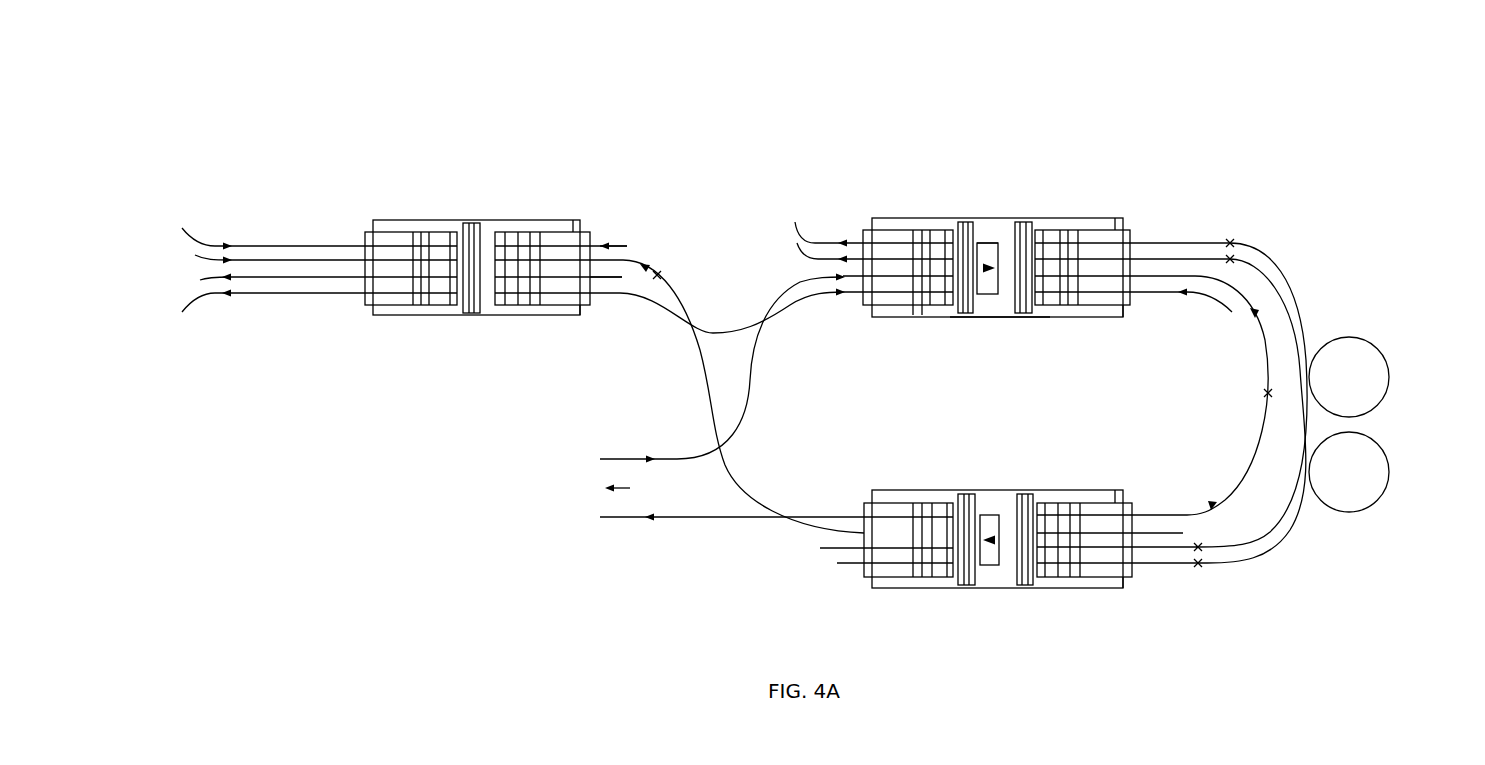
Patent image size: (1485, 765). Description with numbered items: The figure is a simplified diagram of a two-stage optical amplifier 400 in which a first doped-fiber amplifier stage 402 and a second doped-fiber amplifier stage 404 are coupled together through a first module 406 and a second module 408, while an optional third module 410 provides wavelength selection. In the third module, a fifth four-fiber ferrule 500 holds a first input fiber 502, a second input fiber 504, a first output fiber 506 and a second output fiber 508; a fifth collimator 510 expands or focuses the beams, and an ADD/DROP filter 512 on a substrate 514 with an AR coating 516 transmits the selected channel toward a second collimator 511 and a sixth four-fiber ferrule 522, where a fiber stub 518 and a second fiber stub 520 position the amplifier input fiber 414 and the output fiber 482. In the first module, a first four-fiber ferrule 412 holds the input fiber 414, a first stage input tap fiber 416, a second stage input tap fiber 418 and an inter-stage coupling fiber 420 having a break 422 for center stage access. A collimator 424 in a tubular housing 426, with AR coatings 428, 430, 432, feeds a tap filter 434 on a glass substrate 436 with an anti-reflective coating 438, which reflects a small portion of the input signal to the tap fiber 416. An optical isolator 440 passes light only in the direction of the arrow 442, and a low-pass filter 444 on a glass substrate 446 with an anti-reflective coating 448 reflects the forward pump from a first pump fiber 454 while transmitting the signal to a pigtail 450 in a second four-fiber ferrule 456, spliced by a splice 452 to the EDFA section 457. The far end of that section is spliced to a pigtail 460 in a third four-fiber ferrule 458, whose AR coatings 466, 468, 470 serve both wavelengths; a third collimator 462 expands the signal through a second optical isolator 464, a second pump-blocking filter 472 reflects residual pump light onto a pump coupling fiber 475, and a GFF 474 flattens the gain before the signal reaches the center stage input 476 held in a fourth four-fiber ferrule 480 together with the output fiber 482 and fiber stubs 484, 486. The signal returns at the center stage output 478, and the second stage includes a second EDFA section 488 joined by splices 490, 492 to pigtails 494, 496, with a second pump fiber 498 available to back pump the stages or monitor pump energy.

The two-stage optical amplifier 400 is at (982, 100).
The first doped-fiber amplifier stage 402 is at (1387, 348).
The second doped-fiber amplifier stage 404 is at (1385, 505).
The first module 406 is at (1045, 215).
The second module 408 is at (998, 488).
The third module 410 is at (490, 220).
The first four-fiber ferrule 412 is at (860, 228).
The amplifier input fiber 414 is at (793, 315).
The first stage input tap fiber 416 is at (800, 226).
The second stage input tap fiber 418 is at (797, 248).
The inter-stage coupling fiber 420 is at (758, 380).
The break 422 is at (637, 489).
The collimator 424 is at (926, 230).
The tubular housing 426 is at (990, 318).
The AR coating 428 is at (920, 308).
The AR coating 430 is at (930, 306).
The AR coating 432 is at (948, 230).
The tap filter 434 is at (960, 313).
The glass substrate 436 is at (965, 222).
The anti-reflective coating 438 is at (972, 315).
The optical isolator 440 is at (992, 245).
The arrow 442 is at (990, 248).
The low-pass filter 444 is at (1020, 315).
The glass substrate 446 is at (1058, 230).
The anti-reflective coating 448 is at (1027, 315).
The pigtail 450 is at (1198, 242).
The splice 452 is at (1230, 241).
The first pump fiber 454 is at (1207, 297).
The second four-fiber ferrule 456 is at (1125, 218).
The EDFA section 457 is at (1390, 377).
The third four-fiber ferrule 458 is at (1123, 490).
The pigtail 460 is at (1180, 566).
The third collimator 462 is at (1055, 503).
The second optical isolator 464 is at (985, 565).
The AR coating 466 is at (1040, 580).
The AR coating 468 is at (1070, 580).
The AR coating 470 is at (1078, 578).
The second pump-blocking filter 472 is at (1028, 494).
The GFF 474 is at (962, 494).
The pump coupling fiber 475 is at (1262, 420).
The center stage input 476 is at (600, 516).
The center stage output 478 is at (600, 459).
The fourth four-fiber ferrule 480 is at (895, 578).
The output fiber 482 is at (797, 525).
The fiber stub 484 is at (835, 549).
The fiber stub 486 is at (845, 565).
The second EDFA section 488 is at (1390, 475).
The splice 490 is at (1233, 257).
The splice 492 is at (1205, 563).
The pigtail 494 is at (1155, 258).
The pigtail 496 is at (1200, 546).
The second pump fiber 498 is at (1183, 532).
The fifth four-fiber ferrule 500 is at (385, 232).
The first input fiber 502 is at (192, 235).
The second input fiber 504 is at (195, 255).
The first output fiber 506 is at (192, 310).
The second output fiber 508 is at (200, 280).
The fifth collimator 510 is at (440, 305).
The collimator 511 is at (512, 232).
The ADD/DROP filter 512 is at (468, 313).
The substrate 514 is at (470, 222).
The AR coating 516 is at (477, 313).
The fiber stub 518 is at (620, 280).
The second fiber stub 520 is at (627, 243).
The sixth four-fiber ferrule 522 is at (573, 230).